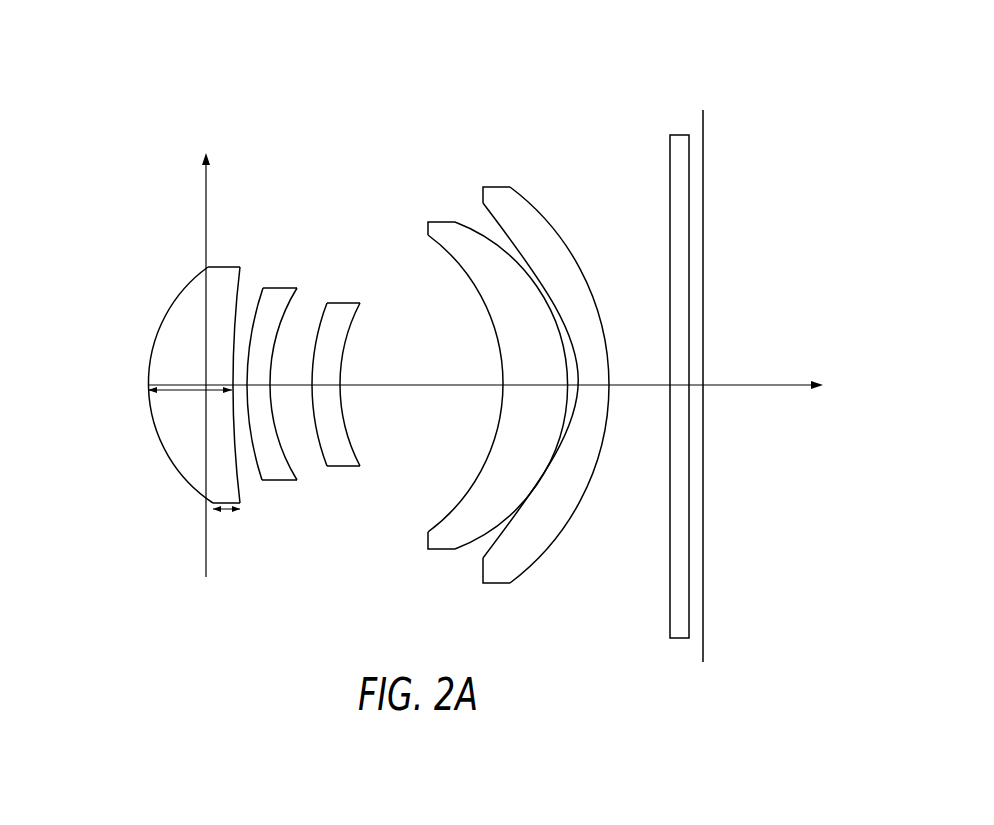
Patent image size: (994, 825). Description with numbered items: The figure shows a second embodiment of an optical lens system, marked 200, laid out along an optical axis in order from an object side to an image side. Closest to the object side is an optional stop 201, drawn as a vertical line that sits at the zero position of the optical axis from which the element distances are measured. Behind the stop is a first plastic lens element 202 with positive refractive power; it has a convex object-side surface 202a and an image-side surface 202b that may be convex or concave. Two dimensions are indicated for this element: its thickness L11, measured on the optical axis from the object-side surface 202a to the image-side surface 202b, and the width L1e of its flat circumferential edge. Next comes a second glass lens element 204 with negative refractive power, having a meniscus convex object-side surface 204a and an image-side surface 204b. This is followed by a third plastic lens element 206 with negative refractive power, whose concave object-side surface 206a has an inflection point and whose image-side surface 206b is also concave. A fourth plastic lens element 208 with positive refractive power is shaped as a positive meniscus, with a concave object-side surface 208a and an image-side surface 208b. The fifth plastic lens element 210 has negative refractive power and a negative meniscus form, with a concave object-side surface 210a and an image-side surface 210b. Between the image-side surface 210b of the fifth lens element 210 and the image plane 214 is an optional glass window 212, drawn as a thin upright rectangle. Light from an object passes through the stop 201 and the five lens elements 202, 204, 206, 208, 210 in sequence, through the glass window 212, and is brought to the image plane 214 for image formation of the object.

The optical lens system 200 is at (778, 81).
The stop 201 is at (206, 221).
The first plastic lens element 202 is at (227, 272).
The object-side surface of first lens element 202a is at (157, 428).
The image-side surface of first lens element 202b is at (238, 463).
The second glass lens element 204 is at (273, 296).
The object-side surface of second lens element 204a is at (258, 468).
The image-side surface of second lens element 204b is at (296, 458).
The third plastic lens element 206 is at (345, 305).
The object-side surface of third lens element 206a is at (303, 353).
The image-side surface of third lens element 206b is at (343, 413).
The fourth plastic lens element 208 is at (440, 228).
The object-side surface of fourth lens element 208a is at (472, 280).
The image-side surface of fourth lens element 208b is at (528, 490).
The fifth plastic lens element 210 is at (510, 198).
The object-side surface of fifth lens element 210a is at (537, 272).
The image-side surface of fifth lens element 210b is at (583, 500).
The glass window 212 is at (677, 165).
The image plane 214 is at (703, 182).
The first lens element thickness L11 is at (190, 402).
The width of flat circumferential edge L1e is at (230, 513).